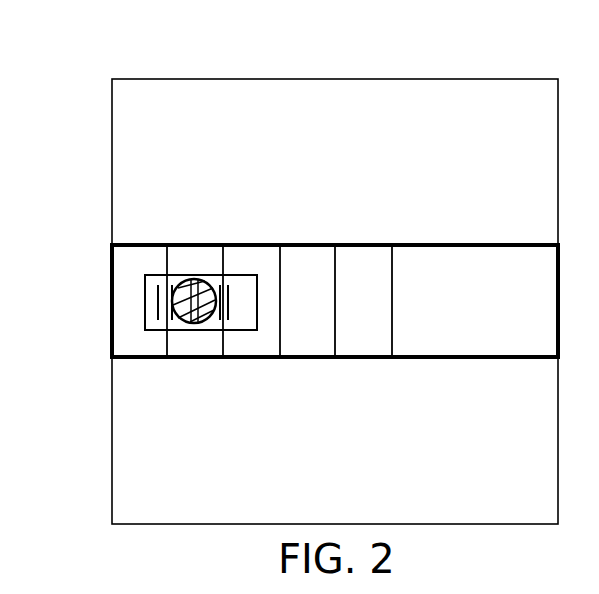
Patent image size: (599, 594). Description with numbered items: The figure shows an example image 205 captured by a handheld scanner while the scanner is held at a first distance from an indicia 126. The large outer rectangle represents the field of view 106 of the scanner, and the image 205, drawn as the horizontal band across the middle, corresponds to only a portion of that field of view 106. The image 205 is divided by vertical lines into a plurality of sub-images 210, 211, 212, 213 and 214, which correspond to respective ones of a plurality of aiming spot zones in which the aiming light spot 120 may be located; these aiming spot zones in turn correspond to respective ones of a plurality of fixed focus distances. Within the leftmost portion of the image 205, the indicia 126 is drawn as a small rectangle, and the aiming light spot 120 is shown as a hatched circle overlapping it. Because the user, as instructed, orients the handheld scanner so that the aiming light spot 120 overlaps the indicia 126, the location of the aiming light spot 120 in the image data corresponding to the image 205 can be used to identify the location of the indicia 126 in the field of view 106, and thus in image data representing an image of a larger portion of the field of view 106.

The field of view 106 is at (335, 78).
The sub-image 210 is at (133, 266).
The sub-image 211 is at (186, 255).
The sub-image 212 is at (249, 255).
The sub-image 213 is at (312, 255).
The sub-image 214 is at (375, 258).
The image 205 is at (492, 245).
The indicia 126 is at (145, 302).
The aiming light spot 120 is at (180, 313).